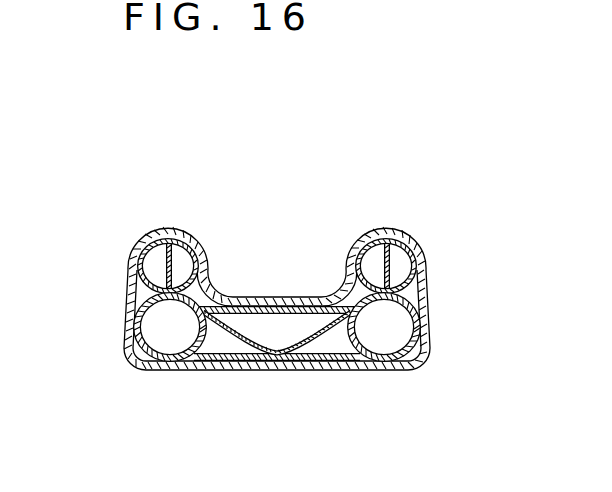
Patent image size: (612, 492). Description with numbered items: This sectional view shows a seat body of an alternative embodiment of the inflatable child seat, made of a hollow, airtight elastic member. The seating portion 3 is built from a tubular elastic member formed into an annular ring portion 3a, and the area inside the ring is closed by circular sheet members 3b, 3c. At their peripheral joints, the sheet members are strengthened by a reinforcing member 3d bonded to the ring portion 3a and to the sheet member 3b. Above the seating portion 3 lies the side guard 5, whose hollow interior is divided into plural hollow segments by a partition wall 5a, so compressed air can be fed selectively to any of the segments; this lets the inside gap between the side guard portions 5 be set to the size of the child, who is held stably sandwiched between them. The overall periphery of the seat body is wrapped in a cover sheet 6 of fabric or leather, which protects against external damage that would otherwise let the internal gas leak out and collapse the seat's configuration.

The seating portion 3 is at (281, 167).
The ring portion 3a is at (135, 333).
The sheet member 3b is at (280, 303).
The sheet member 3c is at (276, 368).
The reinforcing member 3d is at (227, 323).
The side guard 5 is at (167, 240).
The partition wall 5a is at (166, 264).
The cover sheet 6 is at (428, 290).